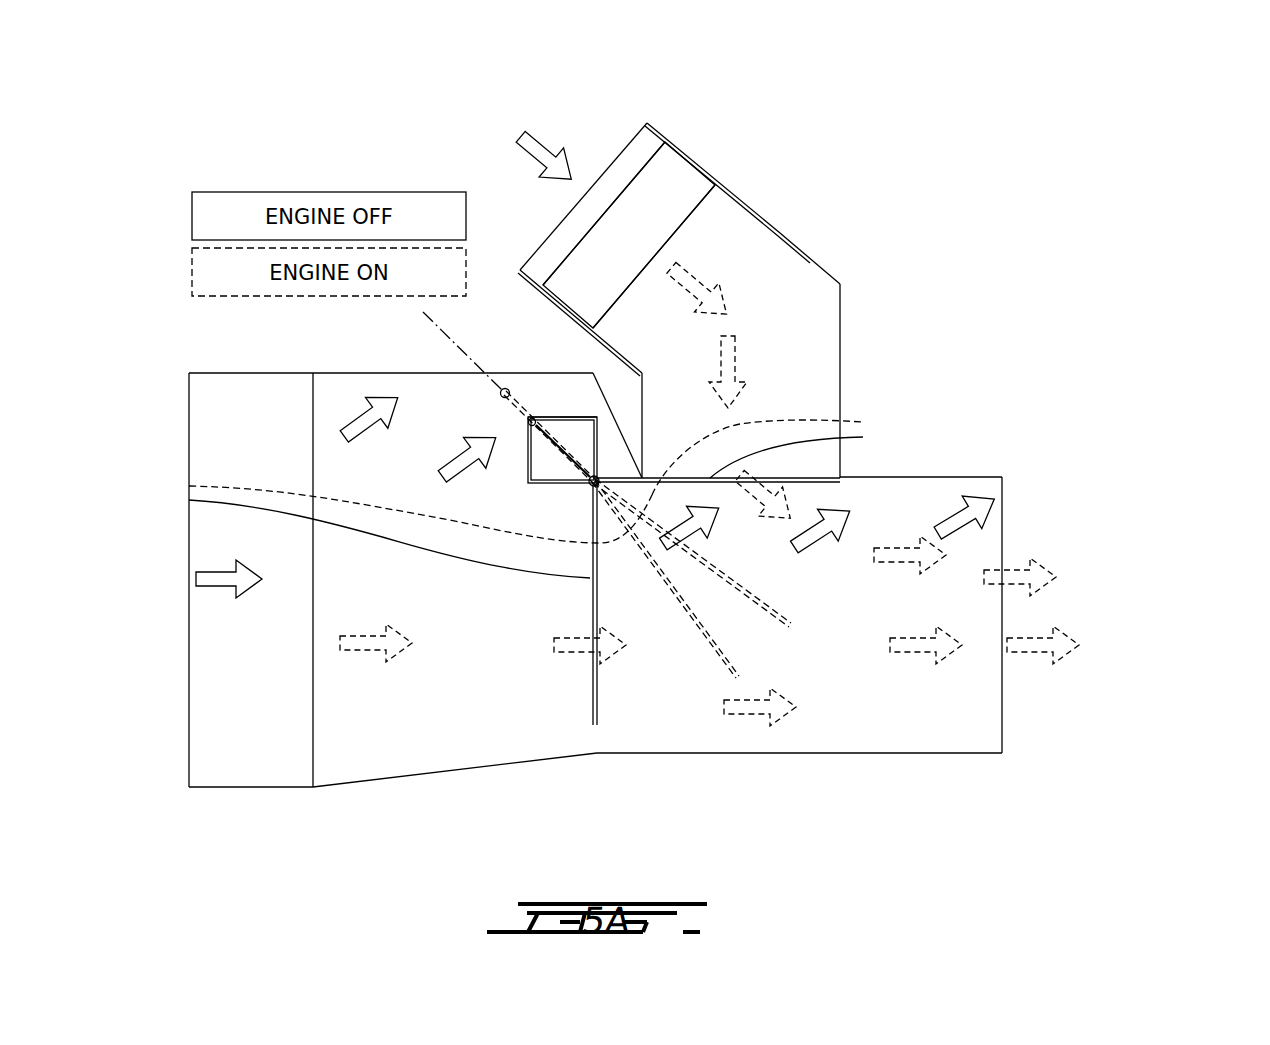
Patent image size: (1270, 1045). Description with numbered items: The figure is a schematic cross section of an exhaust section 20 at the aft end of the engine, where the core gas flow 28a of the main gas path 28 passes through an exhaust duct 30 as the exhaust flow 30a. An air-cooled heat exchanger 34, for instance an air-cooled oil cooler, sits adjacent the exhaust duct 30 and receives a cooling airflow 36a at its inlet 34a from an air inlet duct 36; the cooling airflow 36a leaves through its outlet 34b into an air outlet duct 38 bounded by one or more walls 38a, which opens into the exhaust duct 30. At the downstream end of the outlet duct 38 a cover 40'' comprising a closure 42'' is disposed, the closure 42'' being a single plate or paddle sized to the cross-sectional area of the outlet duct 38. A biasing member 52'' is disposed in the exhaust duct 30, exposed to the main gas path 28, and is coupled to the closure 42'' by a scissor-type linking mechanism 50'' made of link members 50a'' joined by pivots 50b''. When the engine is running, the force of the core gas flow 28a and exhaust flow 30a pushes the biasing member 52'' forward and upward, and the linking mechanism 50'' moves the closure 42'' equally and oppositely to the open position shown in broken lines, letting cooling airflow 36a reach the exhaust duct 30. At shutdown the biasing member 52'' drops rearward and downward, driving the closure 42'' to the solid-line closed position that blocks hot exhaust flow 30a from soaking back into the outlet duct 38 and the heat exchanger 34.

The exhaust section 20 is at (1132, 208).
The main gas path 28 is at (269, 745).
The core gas flow 28a is at (221, 587).
The exhaust duct 30 is at (497, 696).
The exhaust flow 30a is at (388, 650).
The air-cooled heat exchanger 34 is at (690, 160).
The inlet 34a is at (582, 236).
The outlet 34b is at (700, 210).
The air inlet duct 36 is at (647, 123).
The cooling airflow 36a is at (528, 147).
The air outlet duct 38 is at (740, 213).
The wall 38a is at (784, 234).
The cover 40'' is at (842, 412).
The closure 42'' is at (779, 457).
The linking mechanism 50'' is at (547, 495).
The link members 50a'' is at (564, 375).
The pivots 50b'' is at (519, 364).
The biasing member 52'' is at (392, 528).